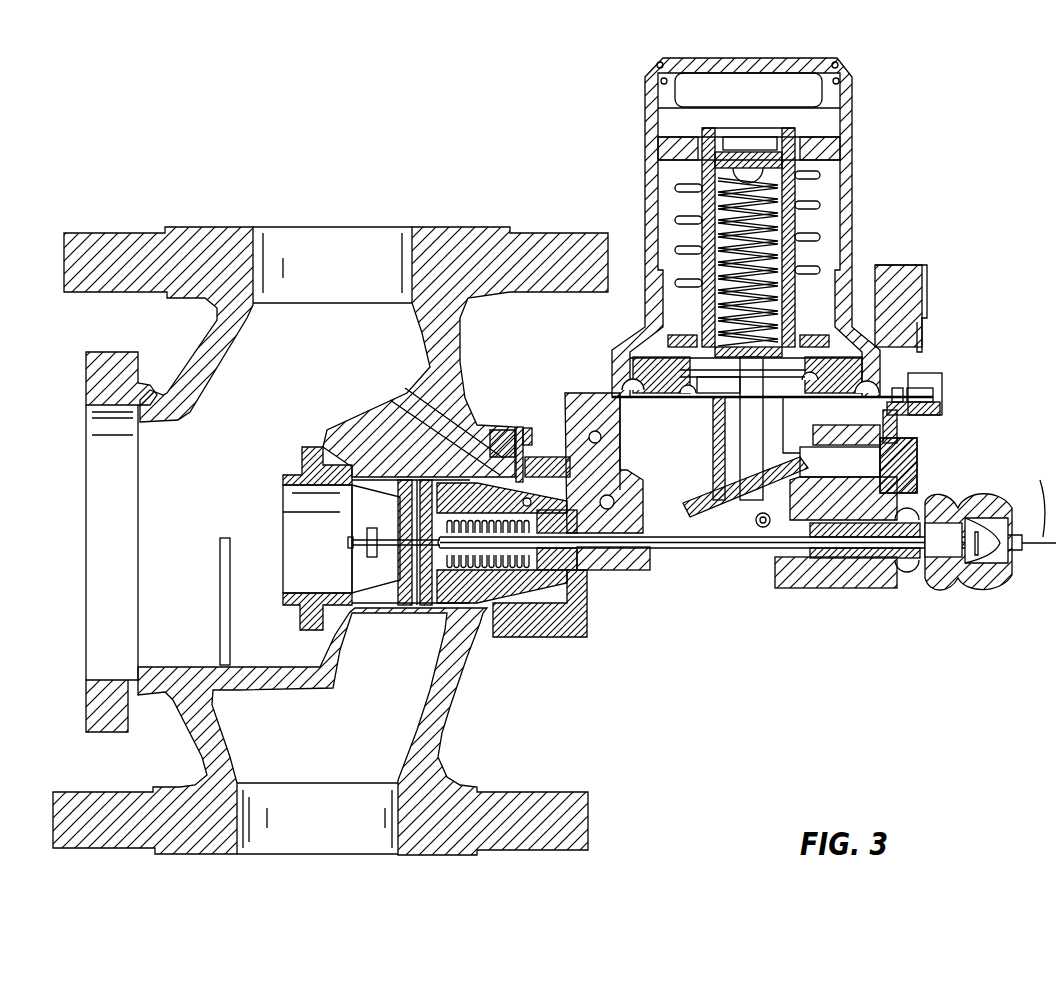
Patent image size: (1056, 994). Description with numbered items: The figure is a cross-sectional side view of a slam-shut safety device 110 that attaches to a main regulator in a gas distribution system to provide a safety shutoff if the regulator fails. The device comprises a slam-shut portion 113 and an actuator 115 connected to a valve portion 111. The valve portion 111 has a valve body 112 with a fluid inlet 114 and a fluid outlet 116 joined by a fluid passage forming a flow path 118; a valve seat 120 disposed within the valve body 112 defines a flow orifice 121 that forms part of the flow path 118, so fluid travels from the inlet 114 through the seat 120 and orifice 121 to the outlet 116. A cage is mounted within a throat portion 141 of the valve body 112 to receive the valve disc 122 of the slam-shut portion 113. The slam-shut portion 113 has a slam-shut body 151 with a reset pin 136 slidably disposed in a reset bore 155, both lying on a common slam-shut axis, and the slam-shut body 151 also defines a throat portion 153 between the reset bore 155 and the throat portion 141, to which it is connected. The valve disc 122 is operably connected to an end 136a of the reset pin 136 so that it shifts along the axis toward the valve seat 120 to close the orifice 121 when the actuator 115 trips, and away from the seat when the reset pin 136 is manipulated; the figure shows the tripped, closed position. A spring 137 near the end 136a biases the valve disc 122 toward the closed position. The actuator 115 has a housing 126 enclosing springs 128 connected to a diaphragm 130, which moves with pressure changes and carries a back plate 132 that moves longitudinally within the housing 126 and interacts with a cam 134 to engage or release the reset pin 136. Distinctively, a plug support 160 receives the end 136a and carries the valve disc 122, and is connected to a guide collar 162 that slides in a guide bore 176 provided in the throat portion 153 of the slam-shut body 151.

The slam-shut safety device 110 is at (673, 738).
The valve portion 111 is at (580, 730).
The valve body 112 is at (460, 705).
The slam-shut portion 113 is at (668, 632).
The fluid inlet 114 is at (308, 818).
The actuator 115 is at (597, 104).
The fluid outlet 116 is at (293, 240).
The flow path 118 is at (185, 500).
The valve seat 120 is at (393, 488).
The flow orifice 121 is at (352, 563).
The valve disc 122 is at (422, 600).
The housing 126 is at (848, 137).
The springs 128 is at (805, 220).
The diaphragm 130 is at (870, 362).
The back plate 132 is at (713, 433).
The cam 134 is at (760, 488).
The reset pin 136 is at (808, 582).
The end of the reset pin 136a is at (443, 433).
The spring 137 is at (519, 427).
The throat portion of the valve body 141 is at (483, 588).
The slam-shut body 151 is at (585, 582).
The throat portion of the slam-shut body 153 is at (570, 592).
The reset bore 155 is at (695, 565).
The plug support 160 is at (387, 528).
The guide collar 162 is at (477, 432).
The guide bore 176 is at (543, 475).